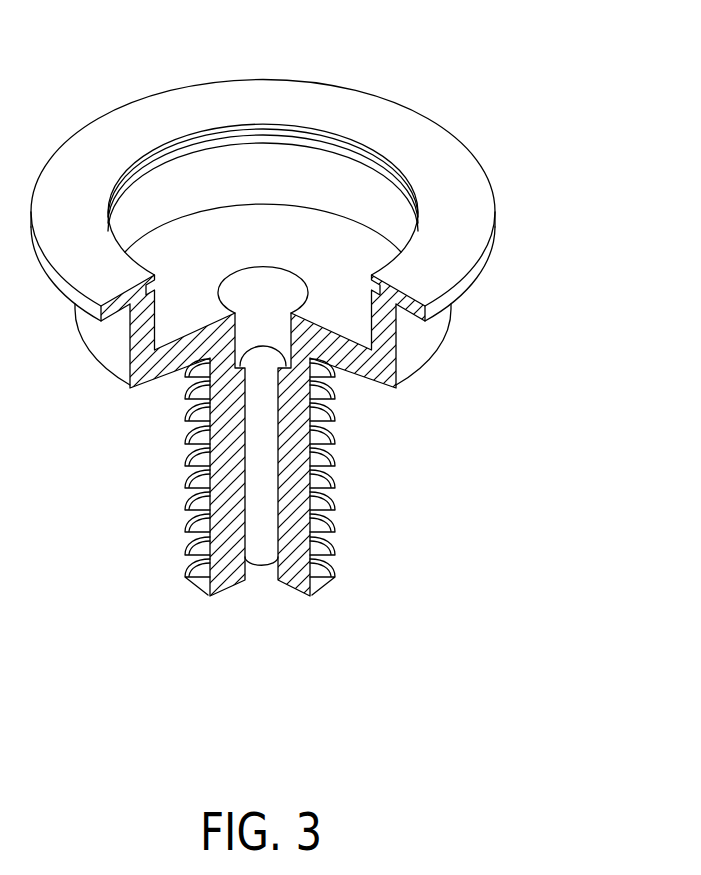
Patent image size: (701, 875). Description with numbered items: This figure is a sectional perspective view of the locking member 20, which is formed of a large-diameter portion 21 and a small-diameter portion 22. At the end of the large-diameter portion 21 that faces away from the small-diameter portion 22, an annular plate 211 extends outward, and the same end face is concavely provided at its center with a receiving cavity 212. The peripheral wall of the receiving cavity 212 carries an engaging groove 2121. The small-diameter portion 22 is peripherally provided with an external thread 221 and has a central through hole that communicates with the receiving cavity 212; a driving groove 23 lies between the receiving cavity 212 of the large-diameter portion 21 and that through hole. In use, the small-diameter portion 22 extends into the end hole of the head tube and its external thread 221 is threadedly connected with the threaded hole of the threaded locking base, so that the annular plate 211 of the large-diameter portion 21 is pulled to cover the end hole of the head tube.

The locking member 20 is at (436, 82).
The large-diameter portion 21 is at (427, 350).
The annular plate 211 is at (110, 149).
The receiving cavity 212 is at (313, 163).
The engaging groove 2121 is at (180, 134).
The small-diameter portion 22 is at (183, 500).
The external thread 221 is at (334, 474).
The driving groove 23 is at (250, 317).